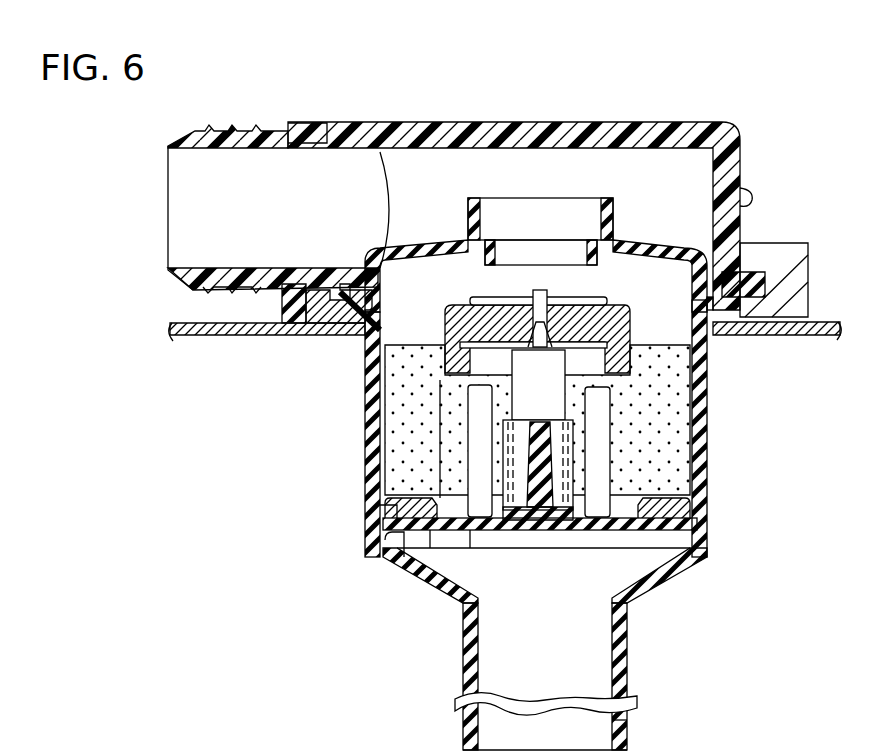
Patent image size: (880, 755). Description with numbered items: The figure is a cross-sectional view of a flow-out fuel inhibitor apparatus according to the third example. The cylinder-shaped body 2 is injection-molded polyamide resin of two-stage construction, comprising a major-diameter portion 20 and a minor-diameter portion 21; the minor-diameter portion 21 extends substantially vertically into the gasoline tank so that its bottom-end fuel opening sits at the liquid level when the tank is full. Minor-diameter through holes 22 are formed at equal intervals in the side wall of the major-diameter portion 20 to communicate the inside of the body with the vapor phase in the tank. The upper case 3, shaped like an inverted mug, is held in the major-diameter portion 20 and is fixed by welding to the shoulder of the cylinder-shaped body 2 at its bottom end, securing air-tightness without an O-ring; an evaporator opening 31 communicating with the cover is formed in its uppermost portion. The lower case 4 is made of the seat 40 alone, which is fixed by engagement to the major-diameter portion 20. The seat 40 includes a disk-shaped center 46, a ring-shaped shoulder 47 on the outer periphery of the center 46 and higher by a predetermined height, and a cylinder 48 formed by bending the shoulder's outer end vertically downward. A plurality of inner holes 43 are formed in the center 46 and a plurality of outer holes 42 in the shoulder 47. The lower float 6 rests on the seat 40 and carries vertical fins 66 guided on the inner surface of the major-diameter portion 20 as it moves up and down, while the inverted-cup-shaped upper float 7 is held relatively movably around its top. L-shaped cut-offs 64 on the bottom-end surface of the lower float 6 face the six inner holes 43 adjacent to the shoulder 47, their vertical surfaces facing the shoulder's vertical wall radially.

The cylinder-shaped body 2 is at (633, 648).
The major-diameter portion 20 is at (707, 406).
The minor-diameter portion 21 is at (620, 730).
The minor-diameter through holes 22 is at (712, 320).
The upper case 3 is at (668, 246).
The evaporator opening 31 is at (517, 256).
The lower case 4 is at (707, 530).
The seat 40 is at (663, 573).
The outer holes 42 is at (663, 498).
The inner holes 43 is at (442, 527).
The center 46 is at (470, 545).
The shoulder 47 is at (410, 493).
The cylinder 48 is at (405, 558).
The lower float 6 is at (571, 432).
The cut-offs 64 is at (393, 513).
The fins 66 is at (395, 382).
The upper float 7 is at (620, 307).